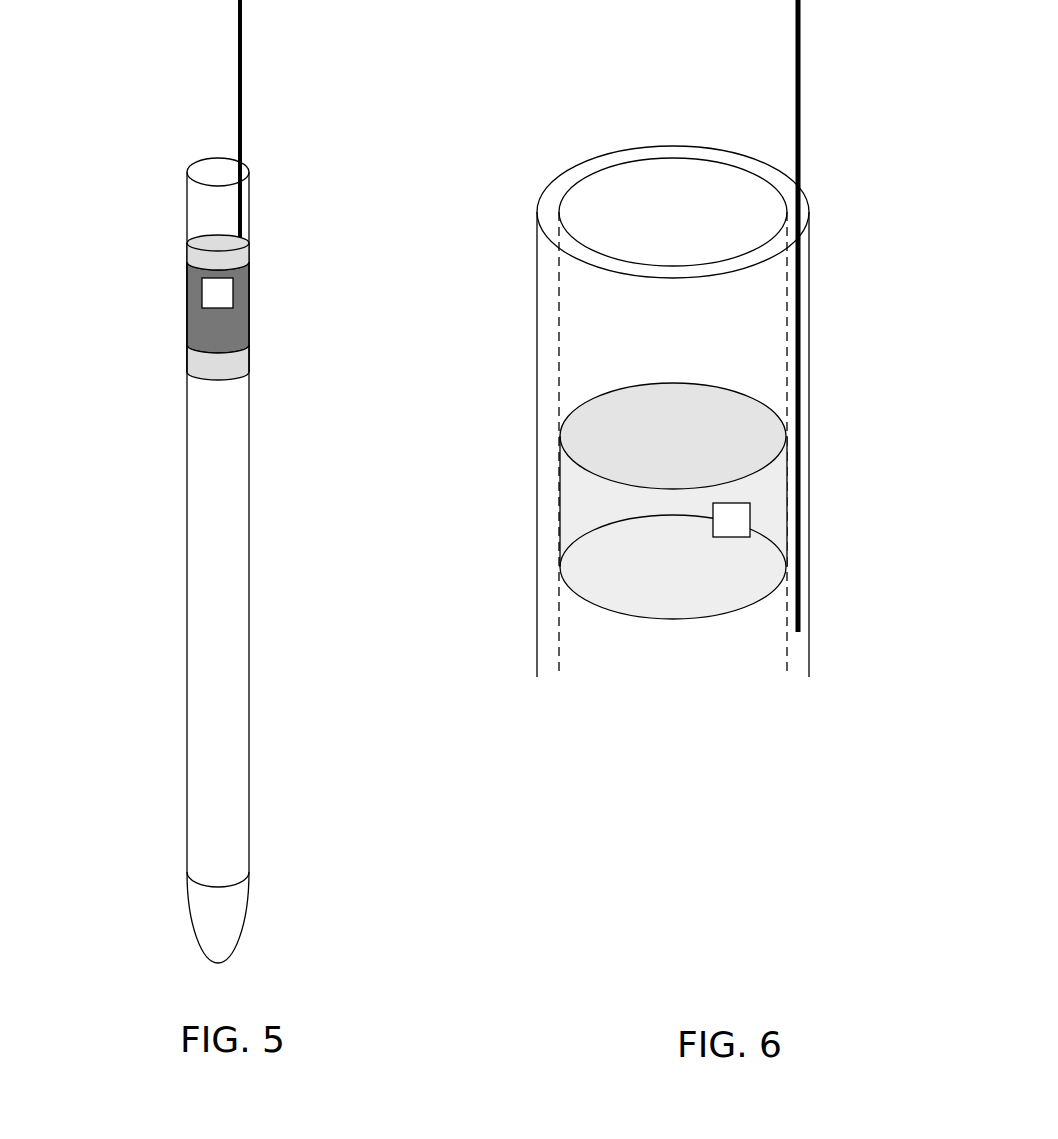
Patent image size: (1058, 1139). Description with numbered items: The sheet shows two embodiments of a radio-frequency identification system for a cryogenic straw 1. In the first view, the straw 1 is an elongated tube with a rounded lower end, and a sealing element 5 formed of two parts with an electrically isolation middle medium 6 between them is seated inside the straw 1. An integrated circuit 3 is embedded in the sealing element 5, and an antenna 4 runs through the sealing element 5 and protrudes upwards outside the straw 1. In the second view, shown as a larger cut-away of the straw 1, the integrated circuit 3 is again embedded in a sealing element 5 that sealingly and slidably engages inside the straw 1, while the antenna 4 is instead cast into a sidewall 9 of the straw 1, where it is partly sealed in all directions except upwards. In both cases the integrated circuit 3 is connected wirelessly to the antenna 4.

In FIG. 5, the cryogenic straw 1 is at (127, 477).
In FIG. 6, the cryogenic straw 1 is at (502, 527).
In FIG. 5, the integrated circuit 3 is at (215, 309).
In FIG. 6, the integrated circuit 3 is at (723, 533).
In FIG. 5, the antenna 4 is at (243, 237).
In FIG. 6, the antenna 4 is at (800, 605).
In FIG. 5, the sealing element 5 is at (200, 363).
In FIG. 6, the sealing element 5 is at (592, 488).
In FIG. 5, the electrically isolation middle medium 6 is at (222, 340).
In FIG. 6, the sidewall 9 is at (810, 370).